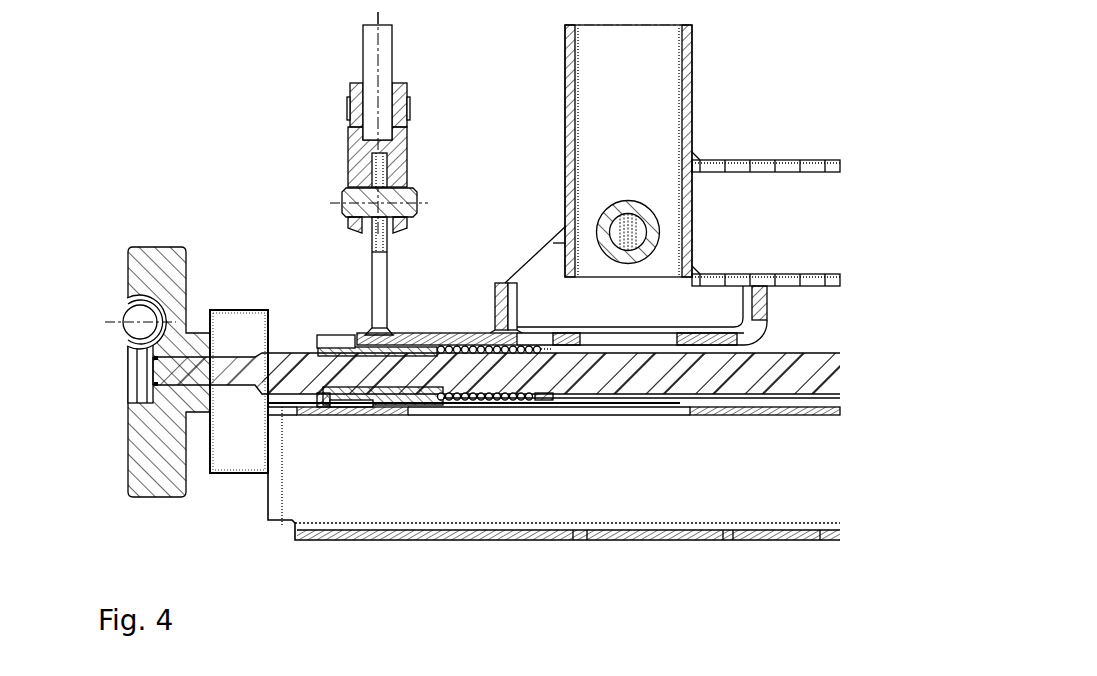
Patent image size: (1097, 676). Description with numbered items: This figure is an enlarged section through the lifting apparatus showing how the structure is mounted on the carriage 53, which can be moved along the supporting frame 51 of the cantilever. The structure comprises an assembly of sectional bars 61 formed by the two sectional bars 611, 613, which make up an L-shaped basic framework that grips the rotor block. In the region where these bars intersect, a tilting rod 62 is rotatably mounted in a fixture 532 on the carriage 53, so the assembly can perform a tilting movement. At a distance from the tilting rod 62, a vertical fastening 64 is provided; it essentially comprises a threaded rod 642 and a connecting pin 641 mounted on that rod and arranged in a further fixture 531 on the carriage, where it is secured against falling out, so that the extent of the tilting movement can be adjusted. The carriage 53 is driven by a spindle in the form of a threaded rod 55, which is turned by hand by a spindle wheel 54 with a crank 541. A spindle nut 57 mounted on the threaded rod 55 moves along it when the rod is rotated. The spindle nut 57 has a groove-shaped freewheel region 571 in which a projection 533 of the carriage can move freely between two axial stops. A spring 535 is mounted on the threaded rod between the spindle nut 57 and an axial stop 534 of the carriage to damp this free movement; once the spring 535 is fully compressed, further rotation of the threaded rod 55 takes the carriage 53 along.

The supporting frame 51 is at (512, 538).
The carriage 53 is at (470, 315).
The fixture 531 is at (377, 300).
The fixture 532 is at (540, 263).
The projection 533 is at (402, 405).
The axial stop 534 is at (531, 399).
The spring 535 is at (483, 401).
The spindle wheel 54 is at (140, 460).
The crank 541 is at (136, 312).
The threaded rod 55 is at (672, 373).
The spindle nut 57 is at (323, 407).
The freewheel region 571 is at (350, 407).
The assembly of sectional bars 61 is at (750, 131).
The sectional bar 611 is at (812, 265).
The sectional bar 613 is at (582, 53).
The tilting rod 62 is at (625, 240).
The vertical fastening 64 is at (247, 128).
The connecting pin 641 is at (357, 198).
The threaded rod 642 is at (375, 52).